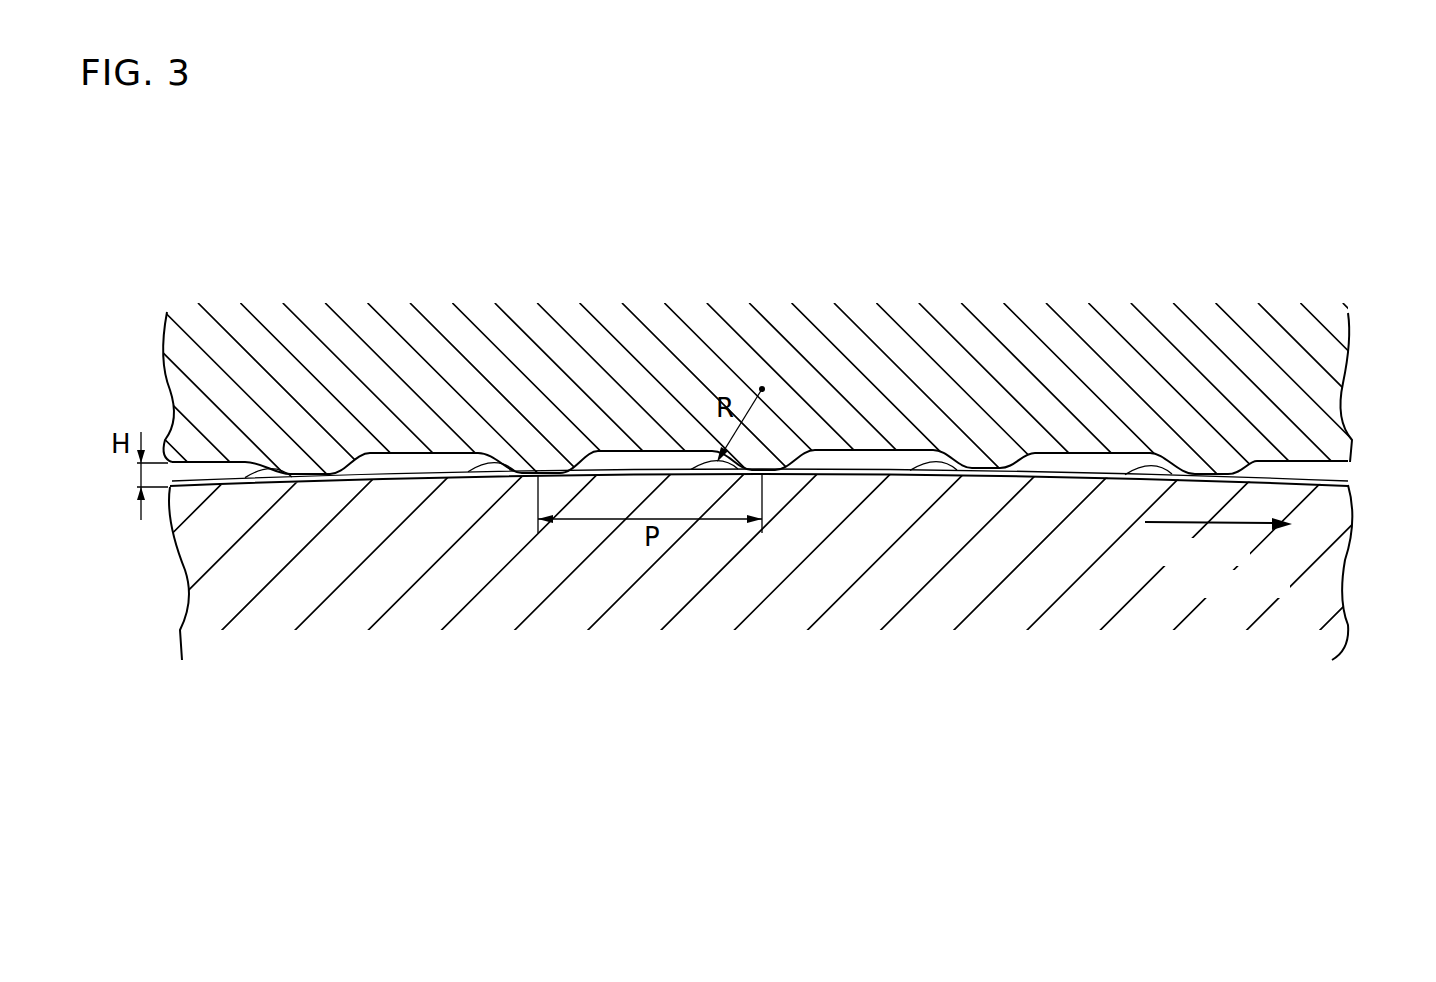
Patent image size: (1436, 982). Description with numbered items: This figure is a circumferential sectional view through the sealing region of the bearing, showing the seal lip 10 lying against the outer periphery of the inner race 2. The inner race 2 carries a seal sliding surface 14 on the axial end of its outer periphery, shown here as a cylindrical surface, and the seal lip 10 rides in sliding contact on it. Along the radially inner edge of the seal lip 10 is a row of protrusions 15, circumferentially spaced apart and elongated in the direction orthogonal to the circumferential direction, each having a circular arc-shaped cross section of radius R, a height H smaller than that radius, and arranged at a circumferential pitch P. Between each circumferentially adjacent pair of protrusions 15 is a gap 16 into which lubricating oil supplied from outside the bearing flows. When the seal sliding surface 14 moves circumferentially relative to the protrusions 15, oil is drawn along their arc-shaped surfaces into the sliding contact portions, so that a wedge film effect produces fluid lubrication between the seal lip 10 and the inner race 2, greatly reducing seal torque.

The inner race 2 is at (1327, 590).
The seal lip 10 is at (1327, 388).
The seal sliding surface 14 is at (1048, 475).
The protrusion 15 is at (300, 480).
The gap 16 is at (423, 463).